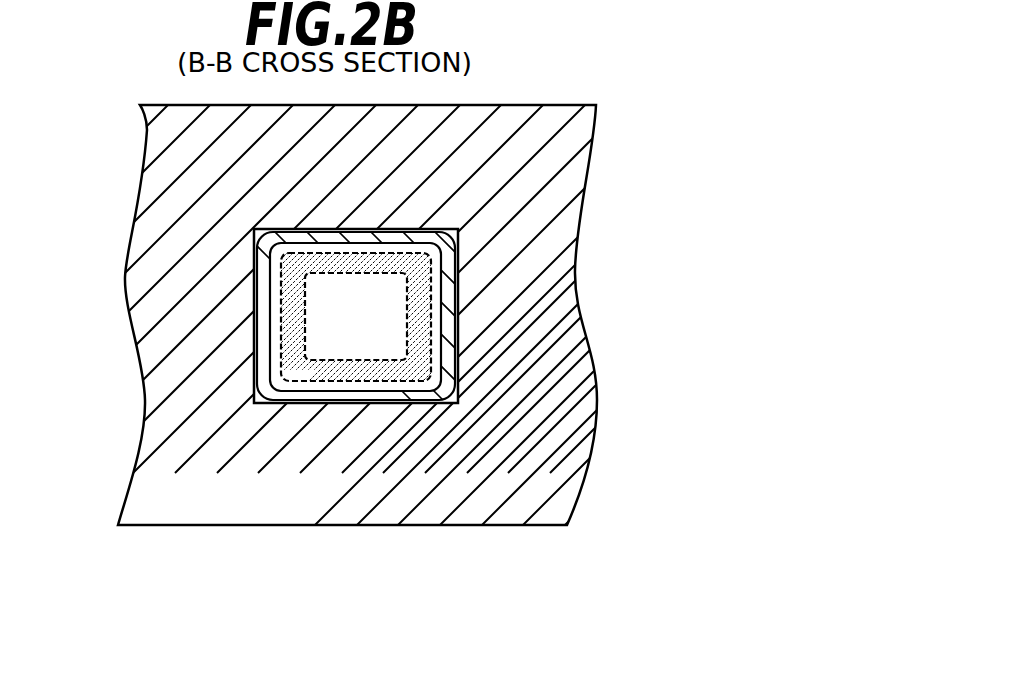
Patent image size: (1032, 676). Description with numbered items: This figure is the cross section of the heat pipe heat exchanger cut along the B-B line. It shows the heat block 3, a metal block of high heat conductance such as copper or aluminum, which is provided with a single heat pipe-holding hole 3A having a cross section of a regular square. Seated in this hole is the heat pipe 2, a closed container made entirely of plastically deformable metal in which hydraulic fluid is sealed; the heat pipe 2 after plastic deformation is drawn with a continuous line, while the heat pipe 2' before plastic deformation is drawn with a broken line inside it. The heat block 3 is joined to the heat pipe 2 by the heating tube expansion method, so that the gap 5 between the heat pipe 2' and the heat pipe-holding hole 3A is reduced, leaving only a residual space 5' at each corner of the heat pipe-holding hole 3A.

The heat pipe 2 is at (422, 200).
The heat pipe before plastic deformation 2' is at (468, 450).
The heat block 3 is at (530, 410).
The heat pipe-holding hole 3A is at (447, 405).
The gap 5 is at (154, 338).
The residual space 5' is at (185, 417).